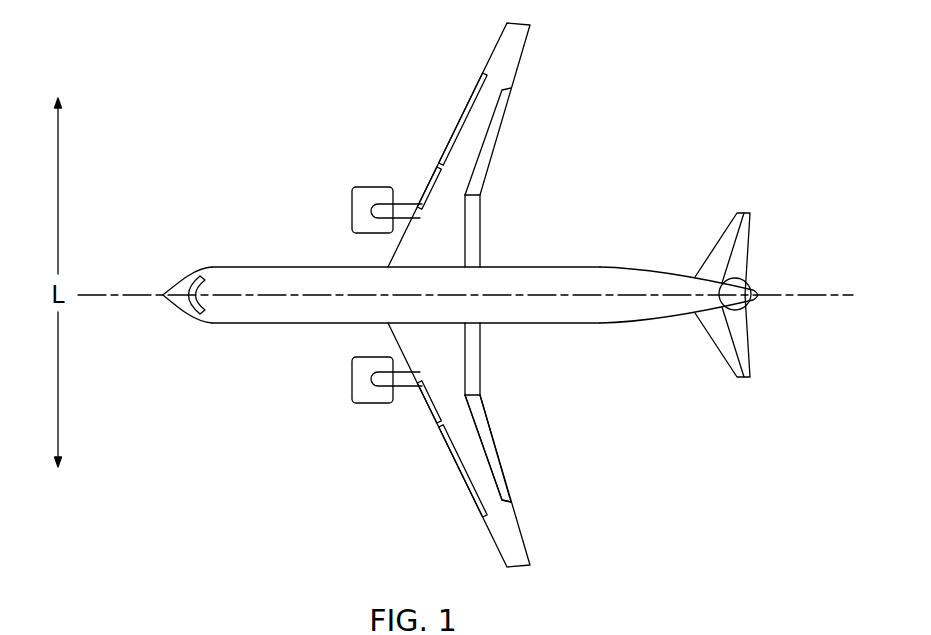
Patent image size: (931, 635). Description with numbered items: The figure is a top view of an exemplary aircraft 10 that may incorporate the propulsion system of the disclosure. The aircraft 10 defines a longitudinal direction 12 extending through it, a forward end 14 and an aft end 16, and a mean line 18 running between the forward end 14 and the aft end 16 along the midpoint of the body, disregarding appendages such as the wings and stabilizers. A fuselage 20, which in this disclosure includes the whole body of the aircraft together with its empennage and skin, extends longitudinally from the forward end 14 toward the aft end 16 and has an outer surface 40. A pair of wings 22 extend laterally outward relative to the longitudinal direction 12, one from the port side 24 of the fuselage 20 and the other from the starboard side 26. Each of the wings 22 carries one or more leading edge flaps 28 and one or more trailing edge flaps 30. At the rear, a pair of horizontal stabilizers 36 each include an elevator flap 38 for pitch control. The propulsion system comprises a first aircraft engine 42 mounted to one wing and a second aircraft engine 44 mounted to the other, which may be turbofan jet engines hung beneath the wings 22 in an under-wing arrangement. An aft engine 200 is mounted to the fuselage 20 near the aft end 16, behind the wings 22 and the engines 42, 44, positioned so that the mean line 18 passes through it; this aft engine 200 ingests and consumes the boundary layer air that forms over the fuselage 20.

The aircraft 10 is at (632, 112).
The longitudinal direction 12 is at (93, 290).
The forward end 14 is at (170, 298).
The aft end 16 is at (783, 333).
The mean line 18 is at (210, 265).
The fuselage 20 is at (213, 316).
The wings 22 is at (485, 295).
The port side 24 is at (278, 337).
The starboard side 26 is at (280, 250).
The leading edge flaps 28 is at (452, 453).
The trailing edge flaps 30 is at (498, 457).
The horizontal stabilizers 36 is at (736, 290).
The elevator flap 38 is at (750, 230).
The outer surface 40 is at (463, 308).
The first aircraft engine 42 is at (360, 421).
The second aircraft engine 44 is at (362, 171).
The aft engine 200 is at (758, 264).